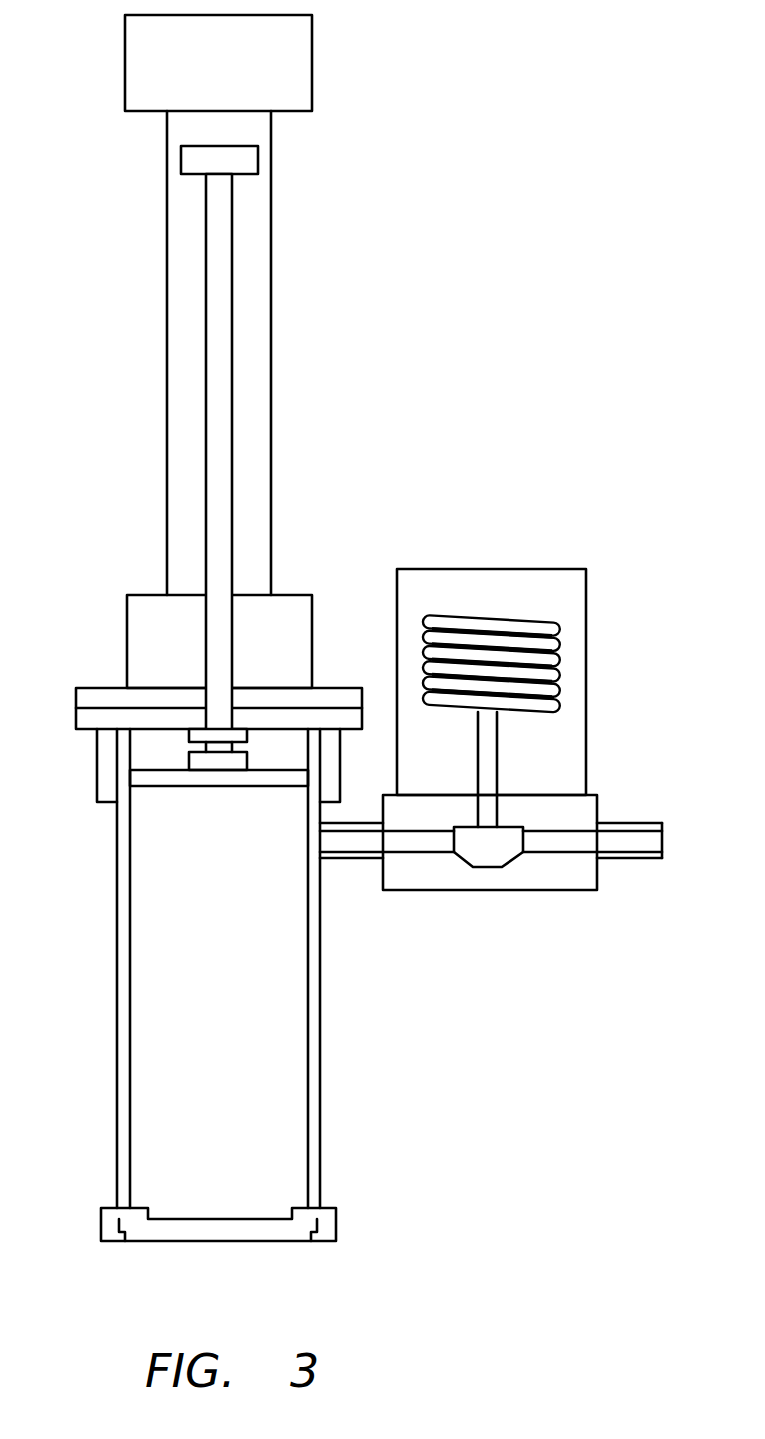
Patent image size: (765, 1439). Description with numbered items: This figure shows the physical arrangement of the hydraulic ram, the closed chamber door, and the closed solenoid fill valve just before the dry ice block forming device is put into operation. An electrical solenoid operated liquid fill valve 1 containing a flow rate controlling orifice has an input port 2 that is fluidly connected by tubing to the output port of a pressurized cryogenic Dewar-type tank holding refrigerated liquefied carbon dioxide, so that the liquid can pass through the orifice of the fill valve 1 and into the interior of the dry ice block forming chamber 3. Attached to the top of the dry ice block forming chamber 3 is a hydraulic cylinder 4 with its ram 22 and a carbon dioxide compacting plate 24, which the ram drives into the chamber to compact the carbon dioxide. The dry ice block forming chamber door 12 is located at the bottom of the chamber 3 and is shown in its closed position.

The electrical solenoid operated liquid fill valve 1 is at (548, 593).
The input port 2 is at (633, 822).
The dry ice block forming chamber 3 is at (278, 1137).
The hydraulic cylinder 4 is at (257, 280).
The dry ice block forming chamber door 12 is at (190, 1252).
The ram 22 is at (218, 452).
The carbon dioxide compacting plate 24 is at (160, 988).